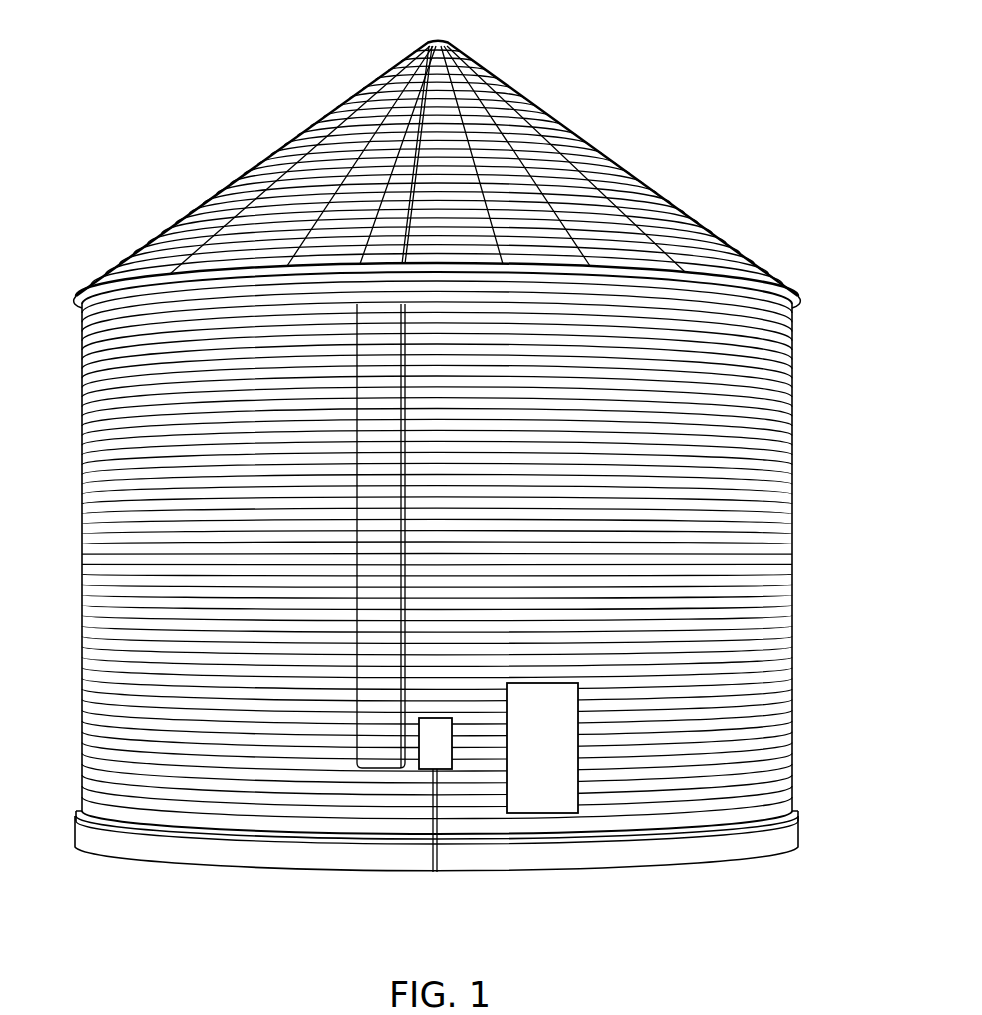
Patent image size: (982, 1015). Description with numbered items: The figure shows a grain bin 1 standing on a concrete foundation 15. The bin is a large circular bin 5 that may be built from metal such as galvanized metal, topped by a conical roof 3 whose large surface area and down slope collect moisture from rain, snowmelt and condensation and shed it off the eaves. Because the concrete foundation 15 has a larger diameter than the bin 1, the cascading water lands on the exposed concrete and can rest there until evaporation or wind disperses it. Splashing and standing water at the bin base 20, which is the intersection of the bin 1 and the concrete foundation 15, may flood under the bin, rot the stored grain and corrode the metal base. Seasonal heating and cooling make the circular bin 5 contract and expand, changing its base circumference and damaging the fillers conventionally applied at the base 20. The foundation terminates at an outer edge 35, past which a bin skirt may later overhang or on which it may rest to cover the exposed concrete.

The grain bin 1 is at (150, 65).
The roof 3 is at (601, 182).
The large circular bin 5 is at (792, 398).
The concrete foundation 15 is at (793, 811).
The bin base 20 is at (78, 808).
The outer edge of the concrete foundation 35 is at (173, 850).